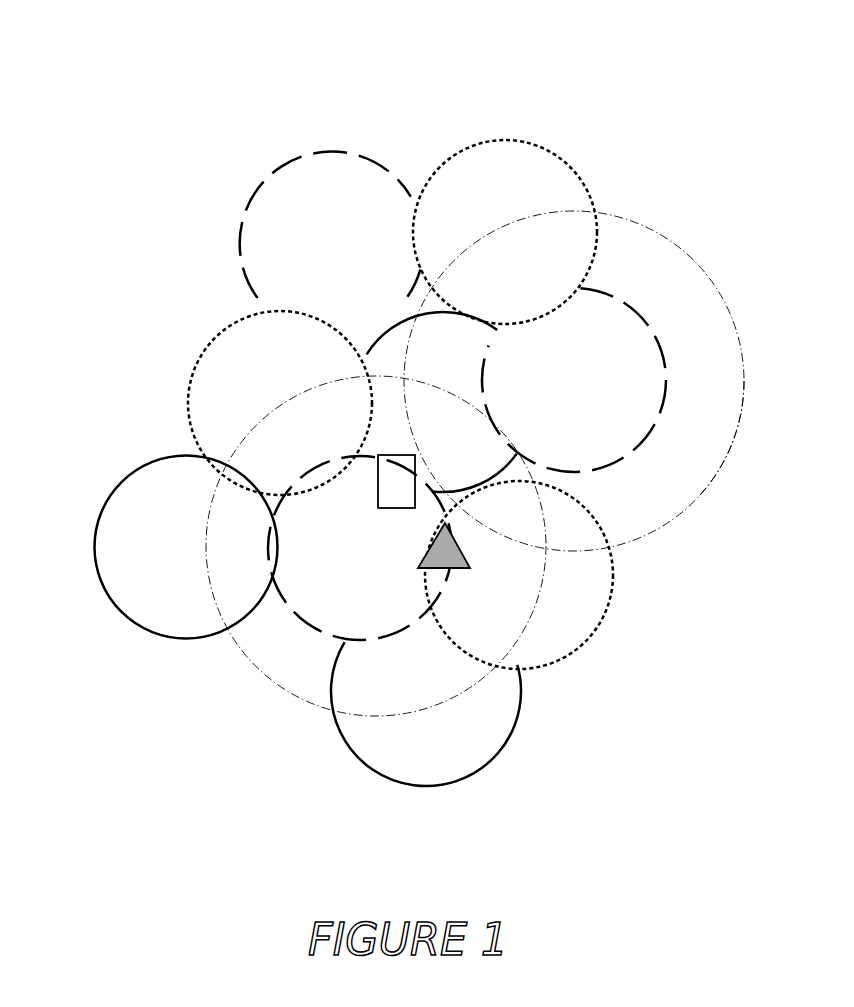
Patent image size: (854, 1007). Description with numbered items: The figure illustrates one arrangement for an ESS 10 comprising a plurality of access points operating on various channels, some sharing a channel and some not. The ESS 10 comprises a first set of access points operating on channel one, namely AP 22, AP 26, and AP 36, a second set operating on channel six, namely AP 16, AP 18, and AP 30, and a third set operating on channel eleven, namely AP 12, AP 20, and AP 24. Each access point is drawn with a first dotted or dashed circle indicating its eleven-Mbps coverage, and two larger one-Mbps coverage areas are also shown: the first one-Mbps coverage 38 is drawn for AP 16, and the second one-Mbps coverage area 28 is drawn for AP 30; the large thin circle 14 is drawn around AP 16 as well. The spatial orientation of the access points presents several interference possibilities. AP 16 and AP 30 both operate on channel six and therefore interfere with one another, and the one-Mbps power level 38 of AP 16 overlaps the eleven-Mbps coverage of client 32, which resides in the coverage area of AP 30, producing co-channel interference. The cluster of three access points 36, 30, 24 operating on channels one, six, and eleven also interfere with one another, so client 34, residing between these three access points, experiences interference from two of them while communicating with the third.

The ESS 10 is at (652, 103).
The AP 12 is at (507, 140).
The large outer boundary circle 14 is at (648, 228).
The AP 16 is at (667, 377).
The AP 18 is at (333, 152).
The AP 20 is at (188, 403).
The AP 22 is at (95, 548).
The AP 24 is at (613, 576).
The AP 26 is at (521, 693).
The 1 Mbps coverage area 28 is at (298, 700).
The AP 30 is at (299, 614).
The client 32 is at (395, 455).
The client 34 is at (445, 523).
The AP 36 is at (513, 453).
The 1 Mbps coverage 38 is at (743, 378).